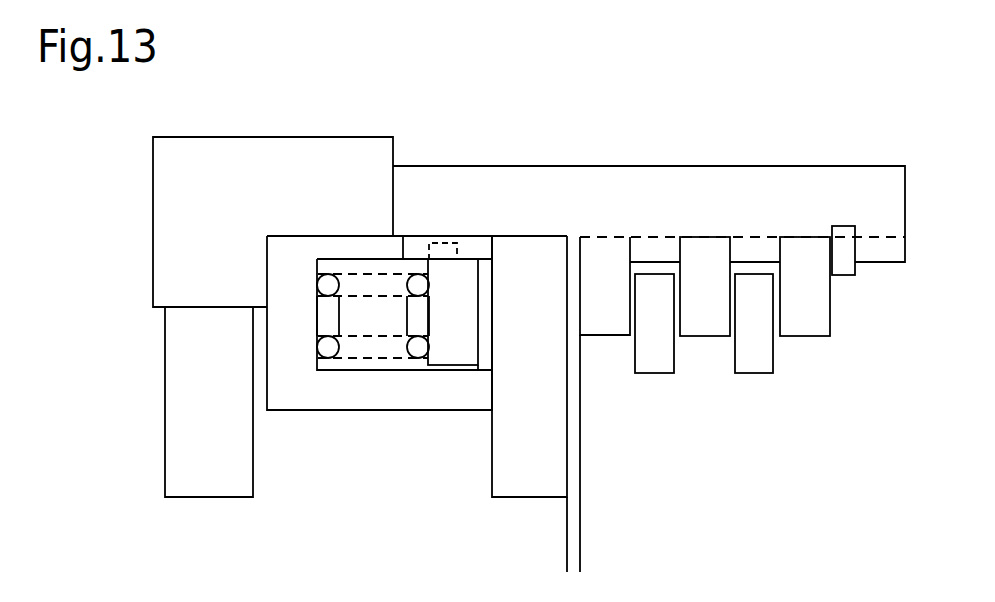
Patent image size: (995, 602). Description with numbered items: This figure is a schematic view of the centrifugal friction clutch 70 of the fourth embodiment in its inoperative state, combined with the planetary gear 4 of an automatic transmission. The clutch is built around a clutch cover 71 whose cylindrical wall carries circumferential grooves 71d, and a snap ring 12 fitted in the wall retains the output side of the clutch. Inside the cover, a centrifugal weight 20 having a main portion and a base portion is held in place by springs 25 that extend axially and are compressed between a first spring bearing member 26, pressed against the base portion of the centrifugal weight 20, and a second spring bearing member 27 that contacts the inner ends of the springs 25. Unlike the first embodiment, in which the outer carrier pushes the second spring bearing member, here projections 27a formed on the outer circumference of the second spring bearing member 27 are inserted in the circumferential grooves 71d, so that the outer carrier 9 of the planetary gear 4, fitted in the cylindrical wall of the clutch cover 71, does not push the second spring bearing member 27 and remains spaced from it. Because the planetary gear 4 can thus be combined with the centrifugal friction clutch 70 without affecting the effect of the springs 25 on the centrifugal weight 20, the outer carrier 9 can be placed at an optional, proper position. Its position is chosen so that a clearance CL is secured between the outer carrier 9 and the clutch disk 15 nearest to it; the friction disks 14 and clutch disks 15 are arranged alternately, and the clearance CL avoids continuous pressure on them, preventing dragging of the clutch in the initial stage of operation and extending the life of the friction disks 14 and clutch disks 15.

The planetary gear 4 is at (822, 368).
The outer carrier 9 is at (520, 498).
The snap ring 12 is at (843, 276).
The friction disks 14 is at (658, 374).
The clutch disks 15 is at (802, 247).
The centrifugal weight 20 is at (225, 136).
The springs 25 is at (371, 362).
The first spring bearing member 26 is at (315, 411).
The second spring bearing member 27 is at (457, 348).
The projections 27a is at (437, 245).
The centrifugal friction clutch 70 is at (531, 73).
The clutch cover 71 is at (563, 166).
The circumferential grooves 71d is at (453, 243).
The clearance CL is at (588, 551).